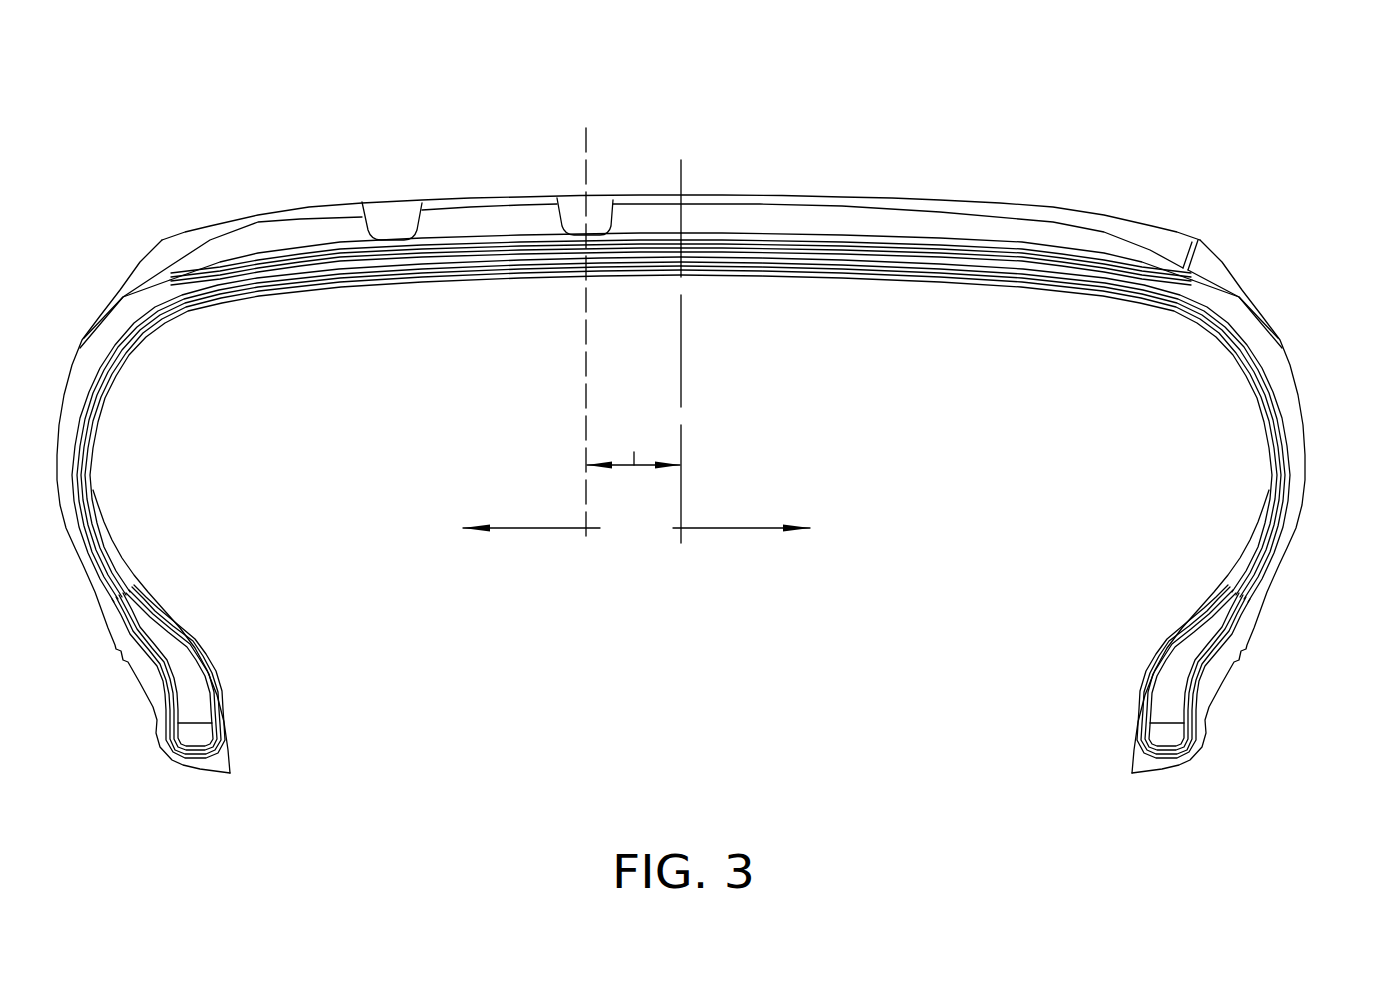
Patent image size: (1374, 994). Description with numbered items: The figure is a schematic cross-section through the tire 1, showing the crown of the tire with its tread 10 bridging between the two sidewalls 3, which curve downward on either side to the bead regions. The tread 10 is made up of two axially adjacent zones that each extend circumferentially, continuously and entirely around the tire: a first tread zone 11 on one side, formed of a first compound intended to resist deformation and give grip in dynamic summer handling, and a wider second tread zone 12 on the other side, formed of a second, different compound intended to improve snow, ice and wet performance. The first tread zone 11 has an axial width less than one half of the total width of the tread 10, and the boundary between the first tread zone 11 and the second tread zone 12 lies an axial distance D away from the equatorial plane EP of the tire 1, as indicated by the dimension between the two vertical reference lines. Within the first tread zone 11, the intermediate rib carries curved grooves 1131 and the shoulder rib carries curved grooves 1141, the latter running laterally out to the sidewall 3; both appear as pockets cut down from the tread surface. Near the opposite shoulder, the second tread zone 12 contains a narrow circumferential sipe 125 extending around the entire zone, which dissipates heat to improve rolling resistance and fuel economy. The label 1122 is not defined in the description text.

The tire 1 is at (1190, 133).
The sidewall 3 is at (127, 263).
The tread 10 is at (1233, 183).
The first tread zone 11 is at (200, 128).
The second tread zone 12 is at (1010, 147).
The circumferential sipe 125 is at (1193, 238).
The second tread rubber layer 1122 is at (860, 203).
The curved grooves 1131 is at (467, 211).
The curved grooves 1141 is at (258, 222).